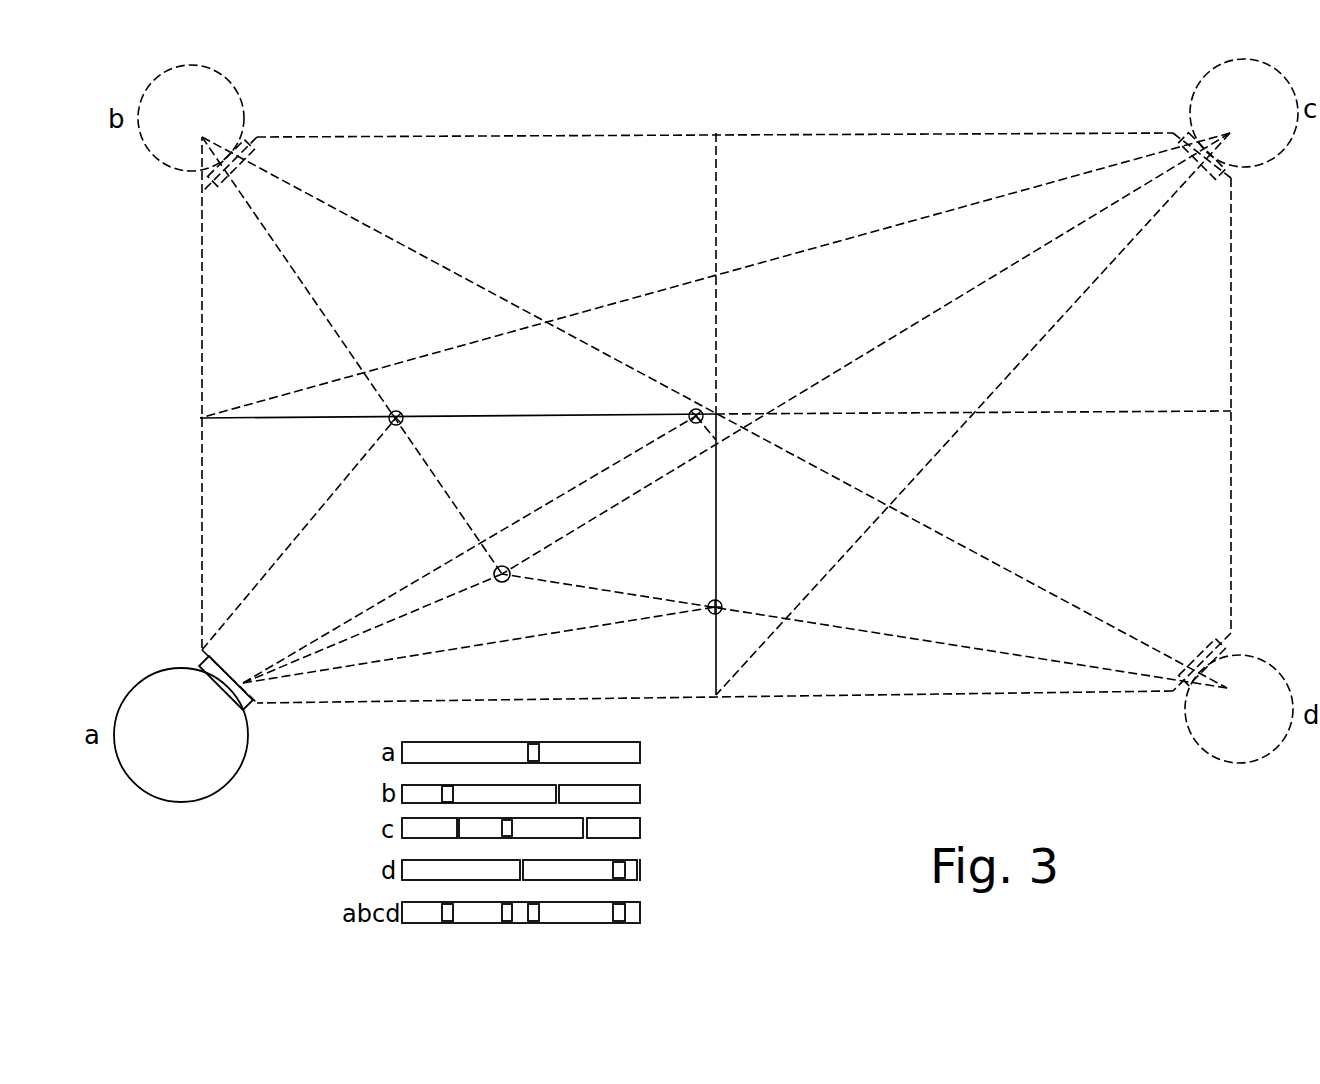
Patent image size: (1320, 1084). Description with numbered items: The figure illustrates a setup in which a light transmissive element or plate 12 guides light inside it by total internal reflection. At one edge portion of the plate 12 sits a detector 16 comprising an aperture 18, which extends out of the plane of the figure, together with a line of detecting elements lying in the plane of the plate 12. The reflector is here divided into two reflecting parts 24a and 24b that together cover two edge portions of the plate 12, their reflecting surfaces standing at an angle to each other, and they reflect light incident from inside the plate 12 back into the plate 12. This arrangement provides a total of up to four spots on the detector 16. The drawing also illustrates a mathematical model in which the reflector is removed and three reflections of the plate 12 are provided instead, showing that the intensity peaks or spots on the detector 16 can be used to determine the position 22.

The light transmissive element or plate 12 is at (214, 523).
The detector 16 is at (198, 749).
The aperture 18 is at (203, 663).
The position 22 is at (518, 586).
The first reflector part 24a is at (266, 406).
The second reflector part 24b is at (724, 660).